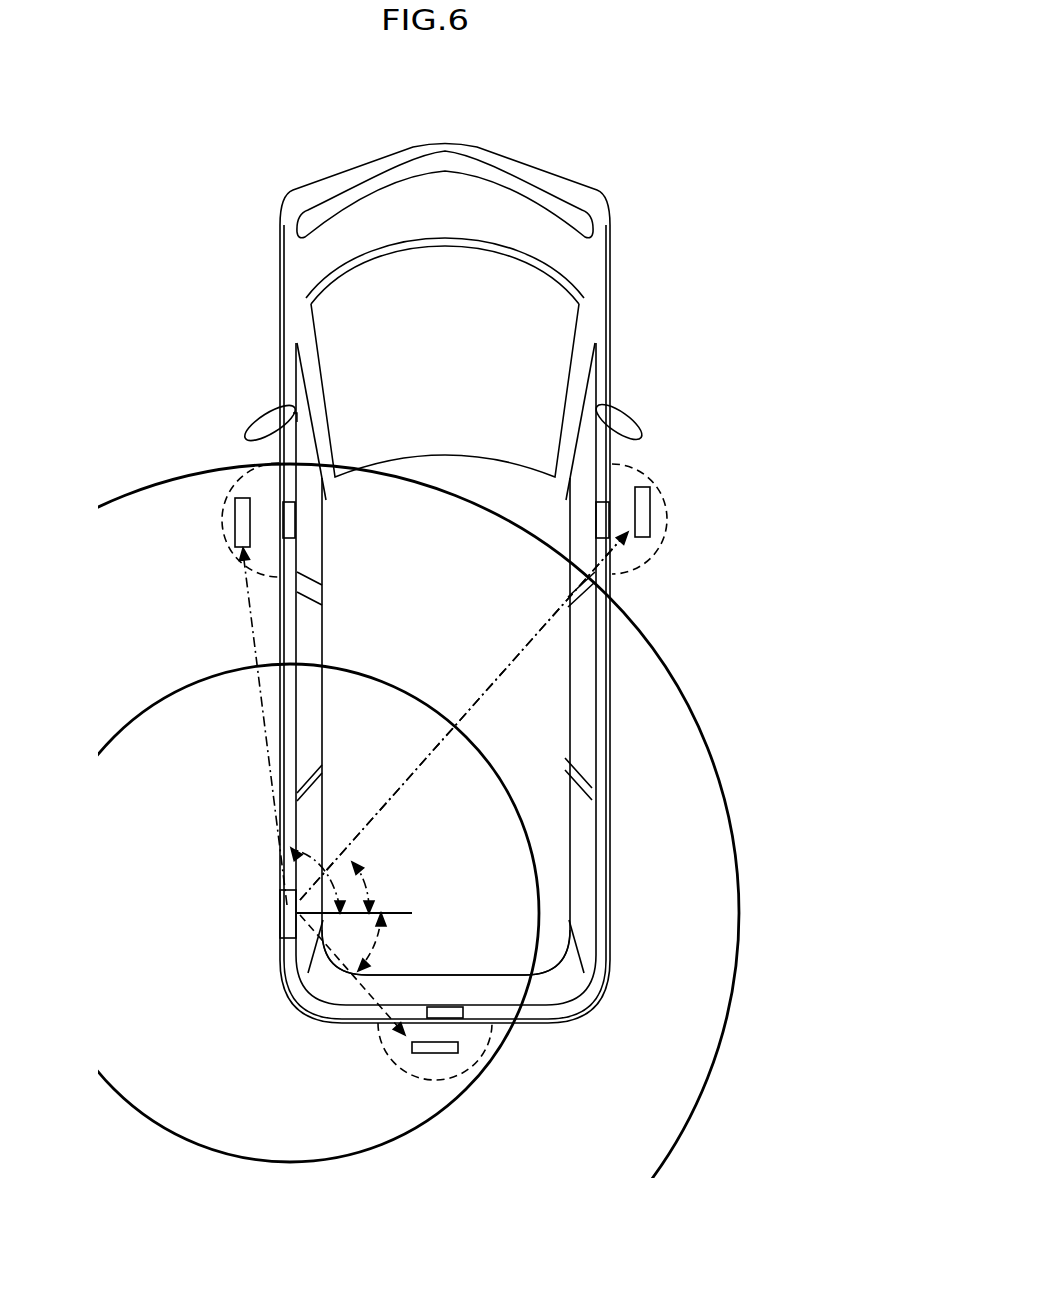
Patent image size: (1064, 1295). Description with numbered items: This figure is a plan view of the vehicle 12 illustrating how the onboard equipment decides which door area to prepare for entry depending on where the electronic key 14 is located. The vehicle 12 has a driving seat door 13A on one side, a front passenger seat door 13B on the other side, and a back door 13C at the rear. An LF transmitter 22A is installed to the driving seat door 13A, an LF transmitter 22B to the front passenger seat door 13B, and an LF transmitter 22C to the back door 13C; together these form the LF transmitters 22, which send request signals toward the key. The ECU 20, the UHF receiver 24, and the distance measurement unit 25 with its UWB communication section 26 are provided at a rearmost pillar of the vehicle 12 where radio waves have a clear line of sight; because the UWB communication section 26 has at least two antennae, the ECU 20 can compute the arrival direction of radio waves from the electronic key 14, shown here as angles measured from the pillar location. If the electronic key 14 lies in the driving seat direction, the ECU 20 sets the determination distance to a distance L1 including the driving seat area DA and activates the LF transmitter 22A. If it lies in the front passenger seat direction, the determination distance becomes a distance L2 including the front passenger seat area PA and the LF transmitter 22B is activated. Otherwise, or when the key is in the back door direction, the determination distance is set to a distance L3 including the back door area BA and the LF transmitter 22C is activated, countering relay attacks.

The vehicle 12 is at (672, 176).
The driving seat door 13A is at (603, 438).
The front passenger seat door 13B is at (290, 452).
The back door 13C is at (360, 995).
The electronic key 14 is at (243, 522).
The electronic control unit (ECU) 20 is at (257, 941).
The LF transmitters 22 is at (446, 746).
The LF transmitter 22A is at (597, 520).
The LF transmitter 22B is at (295, 522).
The LF transmitter 22C is at (445, 1007).
The UHF receiver 24 is at (257, 941).
The distance measurement unit 25 is at (257, 941).
The UWB communication section 26 is at (280, 936).
The distance L1 is at (737, 573).
The distance L2 is at (717, 770).
The distance L3 is at (470, 1098).
The front passenger seat area PA is at (233, 555).
The driving seat area DA is at (655, 548).
The back door area BA is at (443, 1080).